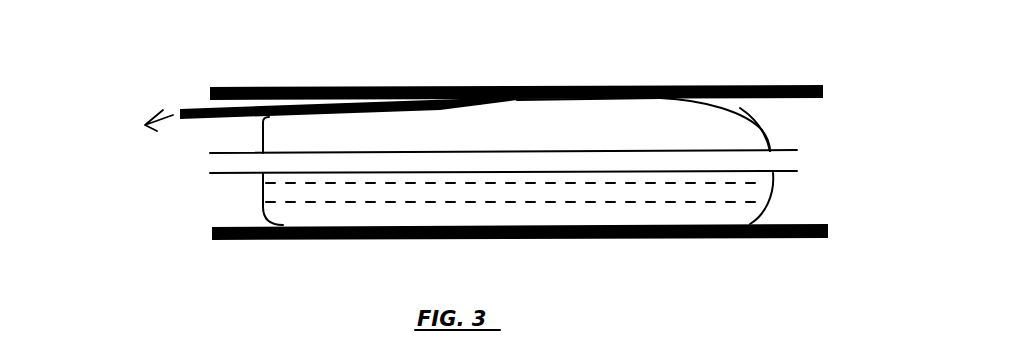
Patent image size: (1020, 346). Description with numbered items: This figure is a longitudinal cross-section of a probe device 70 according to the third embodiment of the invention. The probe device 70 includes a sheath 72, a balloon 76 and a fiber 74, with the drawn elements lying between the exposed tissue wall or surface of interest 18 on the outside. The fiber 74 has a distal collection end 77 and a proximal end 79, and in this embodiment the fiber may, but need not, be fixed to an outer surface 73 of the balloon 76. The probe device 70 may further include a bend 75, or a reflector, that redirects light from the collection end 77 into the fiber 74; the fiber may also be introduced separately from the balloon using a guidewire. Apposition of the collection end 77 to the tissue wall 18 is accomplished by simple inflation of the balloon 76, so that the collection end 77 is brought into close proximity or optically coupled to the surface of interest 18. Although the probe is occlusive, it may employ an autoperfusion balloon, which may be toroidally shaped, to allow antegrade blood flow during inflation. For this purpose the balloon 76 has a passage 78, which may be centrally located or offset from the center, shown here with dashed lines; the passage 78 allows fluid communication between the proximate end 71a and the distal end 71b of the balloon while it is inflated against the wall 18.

The exposed tissue wall or surface of interest 18 is at (730, 86).
The probe device 70 is at (878, 137).
The proximate end of balloon 71a is at (262, 136).
The distal end of balloon 71b is at (757, 218).
The sheath 72 is at (598, 150).
The outer surface of balloon 73 is at (580, 99).
The fiber 74 is at (492, 108).
The bend 75 is at (516, 99).
The balloon 76 is at (763, 128).
The distal collection end 77 is at (537, 100).
The passage 78 is at (468, 205).
The proximal end 79 is at (133, 122).